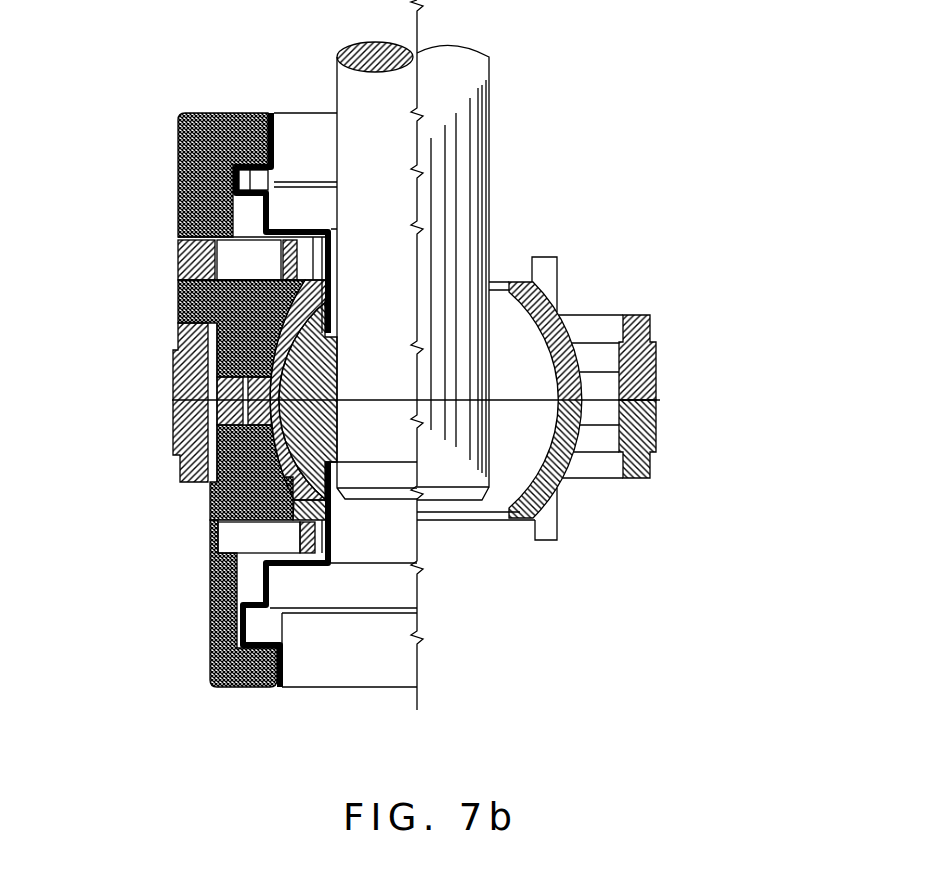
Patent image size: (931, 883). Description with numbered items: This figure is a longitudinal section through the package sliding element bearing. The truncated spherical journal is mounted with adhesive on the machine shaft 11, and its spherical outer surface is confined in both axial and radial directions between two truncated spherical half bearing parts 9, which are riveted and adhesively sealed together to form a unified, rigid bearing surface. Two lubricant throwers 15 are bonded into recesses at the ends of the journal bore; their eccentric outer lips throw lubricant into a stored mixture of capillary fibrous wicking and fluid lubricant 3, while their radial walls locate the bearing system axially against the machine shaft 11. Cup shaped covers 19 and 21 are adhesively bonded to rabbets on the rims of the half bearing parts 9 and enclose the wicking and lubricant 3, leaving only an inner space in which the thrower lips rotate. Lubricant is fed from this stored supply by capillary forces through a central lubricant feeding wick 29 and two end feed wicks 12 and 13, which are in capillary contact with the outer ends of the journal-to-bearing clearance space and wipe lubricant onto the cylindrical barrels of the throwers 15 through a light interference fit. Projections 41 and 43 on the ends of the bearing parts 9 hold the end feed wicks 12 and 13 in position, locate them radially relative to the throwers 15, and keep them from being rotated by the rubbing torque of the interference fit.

The capillary fibrous wicking and fluid lubricant 3 is at (180, 185).
The half bearing part 9 is at (557, 313).
The machine shaft 11 is at (488, 57).
The end feed wick 12 is at (288, 535).
The end feed wick 13 is at (182, 250).
The lubricant thrower 15 is at (268, 208).
The cup shaped cover 19 is at (212, 662).
The cup shaped cover 21 is at (178, 113).
The central lubricant feeding wick 29 is at (175, 437).
The projection 41 is at (548, 533).
The projection 43 is at (541, 265).